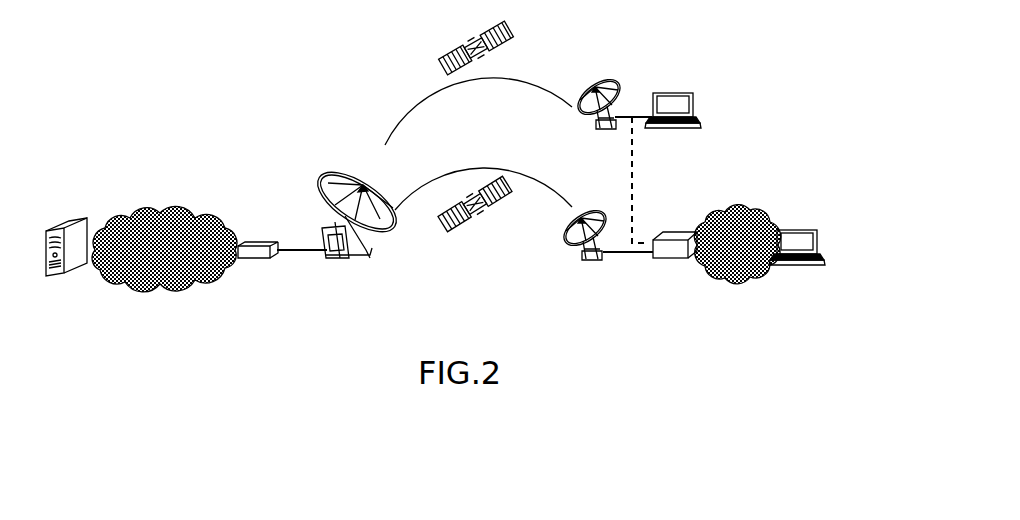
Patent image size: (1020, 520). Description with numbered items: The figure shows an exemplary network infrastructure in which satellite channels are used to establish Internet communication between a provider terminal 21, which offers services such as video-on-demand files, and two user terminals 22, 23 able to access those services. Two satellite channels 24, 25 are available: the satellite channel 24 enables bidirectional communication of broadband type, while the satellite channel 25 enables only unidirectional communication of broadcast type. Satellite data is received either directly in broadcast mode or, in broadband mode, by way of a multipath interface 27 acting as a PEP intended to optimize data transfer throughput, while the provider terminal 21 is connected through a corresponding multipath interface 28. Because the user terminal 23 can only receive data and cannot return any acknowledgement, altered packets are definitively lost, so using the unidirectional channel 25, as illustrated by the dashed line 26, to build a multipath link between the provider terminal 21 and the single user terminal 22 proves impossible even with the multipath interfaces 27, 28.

The provider terminal 21 is at (65, 275).
The user terminal 22 is at (800, 266).
The user terminal 23 is at (683, 92).
The satellite channel 24 is at (527, 174).
The satellite channel 25 is at (529, 80).
The dashed line 26 is at (631, 170).
The multipath interface 27 is at (670, 259).
The multipath interface 28 is at (258, 259).